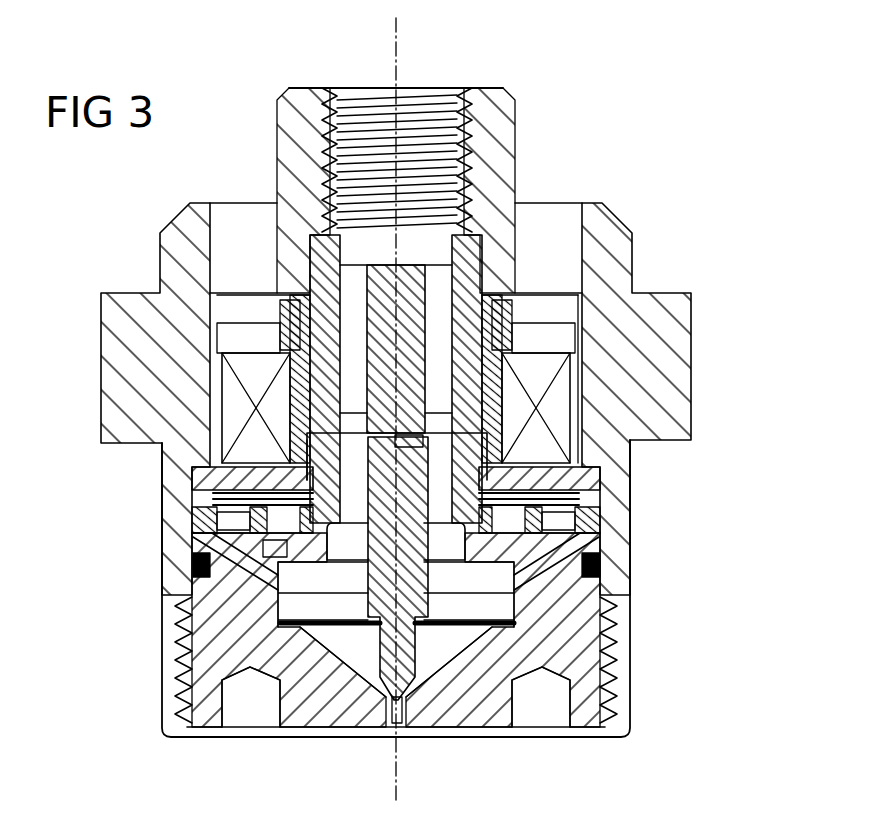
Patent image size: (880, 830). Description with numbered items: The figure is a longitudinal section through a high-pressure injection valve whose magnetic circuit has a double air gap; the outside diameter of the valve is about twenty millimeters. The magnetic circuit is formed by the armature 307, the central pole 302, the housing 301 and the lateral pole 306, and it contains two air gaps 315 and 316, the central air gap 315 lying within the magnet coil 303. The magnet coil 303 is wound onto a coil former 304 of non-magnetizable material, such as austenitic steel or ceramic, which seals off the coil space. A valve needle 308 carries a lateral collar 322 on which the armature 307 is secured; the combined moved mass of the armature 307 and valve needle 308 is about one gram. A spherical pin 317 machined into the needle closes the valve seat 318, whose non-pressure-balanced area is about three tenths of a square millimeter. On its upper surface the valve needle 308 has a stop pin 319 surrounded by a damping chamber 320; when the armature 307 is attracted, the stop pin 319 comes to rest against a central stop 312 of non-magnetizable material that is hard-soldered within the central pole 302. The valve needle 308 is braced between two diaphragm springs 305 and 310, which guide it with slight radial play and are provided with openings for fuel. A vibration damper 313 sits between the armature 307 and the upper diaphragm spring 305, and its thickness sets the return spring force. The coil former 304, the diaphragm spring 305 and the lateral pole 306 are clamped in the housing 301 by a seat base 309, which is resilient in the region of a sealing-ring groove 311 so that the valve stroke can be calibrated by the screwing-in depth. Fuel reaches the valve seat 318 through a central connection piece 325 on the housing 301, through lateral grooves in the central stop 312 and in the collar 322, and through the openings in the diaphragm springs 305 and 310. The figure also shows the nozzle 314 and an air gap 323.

The housing 301 is at (660, 348).
The central pole 302 is at (470, 250).
The magnet coil 303 is at (540, 370).
The coil former 304 is at (590, 472).
The diaphragm spring 305 is at (575, 500).
The lateral pole 306 is at (575, 530).
The armature 307 is at (520, 590).
The valve needle 308 is at (515, 637).
The seat base 309 is at (500, 705).
The diaphragm spring 310 is at (330, 640).
The sealing-ring groove 311 is at (192, 573).
The central stop 312 is at (410, 262).
The vibration damper 313 is at (195, 598).
The nozzle 314 is at (408, 712).
The central air gap 315 is at (305, 424).
The air gap 316 is at (205, 540).
The spherical pin 317 is at (385, 695).
The valve seat 318 is at (455, 712).
The stop pin 319 is at (440, 398).
The damping chamber 320 is at (455, 433).
The lateral collar 322 is at (170, 650).
The air gap 323 is at (195, 533).
The central connection piece 325 is at (292, 88).